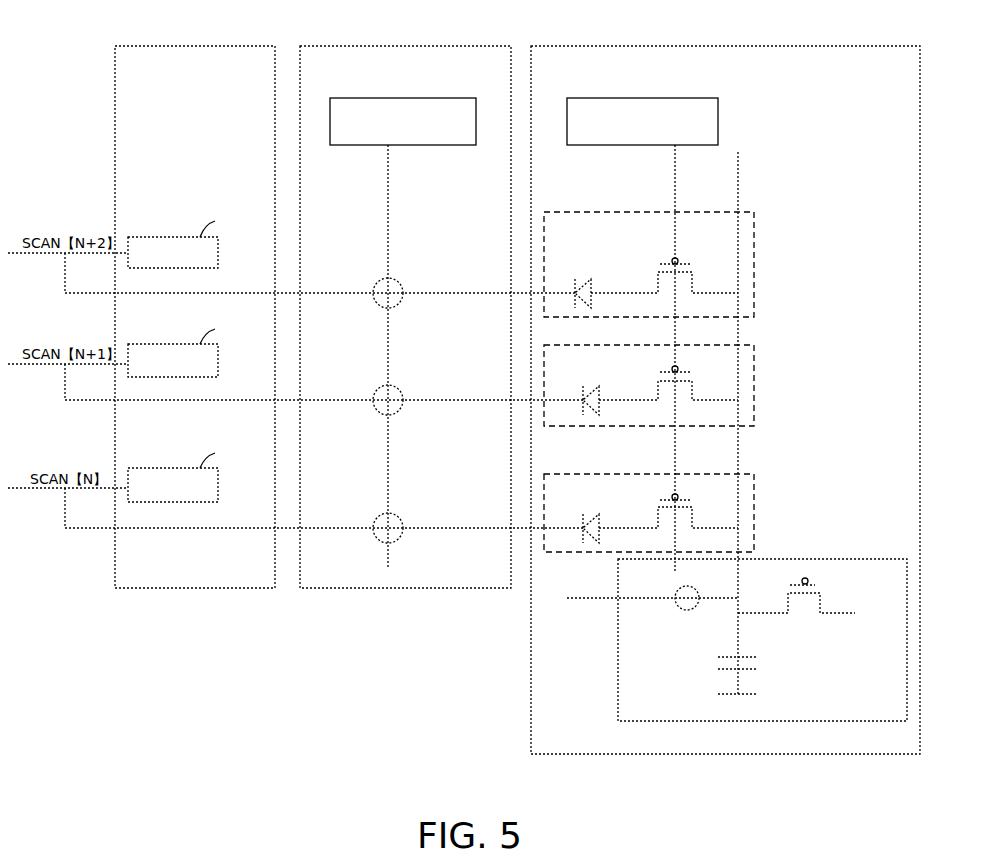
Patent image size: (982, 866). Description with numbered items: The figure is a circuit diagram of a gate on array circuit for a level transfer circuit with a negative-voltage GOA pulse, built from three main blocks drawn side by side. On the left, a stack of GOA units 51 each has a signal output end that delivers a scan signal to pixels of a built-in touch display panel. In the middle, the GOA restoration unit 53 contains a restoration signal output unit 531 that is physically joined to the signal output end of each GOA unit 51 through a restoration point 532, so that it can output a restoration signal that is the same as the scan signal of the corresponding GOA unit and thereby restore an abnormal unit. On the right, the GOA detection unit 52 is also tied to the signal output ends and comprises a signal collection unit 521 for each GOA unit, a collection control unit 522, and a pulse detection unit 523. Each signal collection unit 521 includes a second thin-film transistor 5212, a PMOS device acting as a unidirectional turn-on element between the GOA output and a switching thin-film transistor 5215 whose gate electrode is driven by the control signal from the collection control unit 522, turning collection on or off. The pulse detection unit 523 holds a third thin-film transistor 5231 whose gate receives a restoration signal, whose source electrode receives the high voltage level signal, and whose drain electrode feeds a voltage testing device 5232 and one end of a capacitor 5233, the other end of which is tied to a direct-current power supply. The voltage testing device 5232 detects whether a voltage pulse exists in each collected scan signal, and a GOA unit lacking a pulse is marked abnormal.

The GOA unit 51 is at (203, 46).
The GOA detection unit 52 is at (700, 46).
The GOA restoration unit 53 is at (362, 46).
The restoration signal output unit 531 is at (372, 98).
The restoration point 532 is at (420, 275).
The collection control unit 522 is at (592, 98).
The signal collection unit 521 is at (585, 212).
The second thin-film transistor 5212 is at (583, 279).
The collection transistor 5215 is at (712, 260).
The pulse detection unit 523 is at (782, 559).
The third thin-film transistor 5231 is at (822, 600).
The voltage testing device 5232 is at (712, 582).
The capacitor 5233 is at (744, 666).